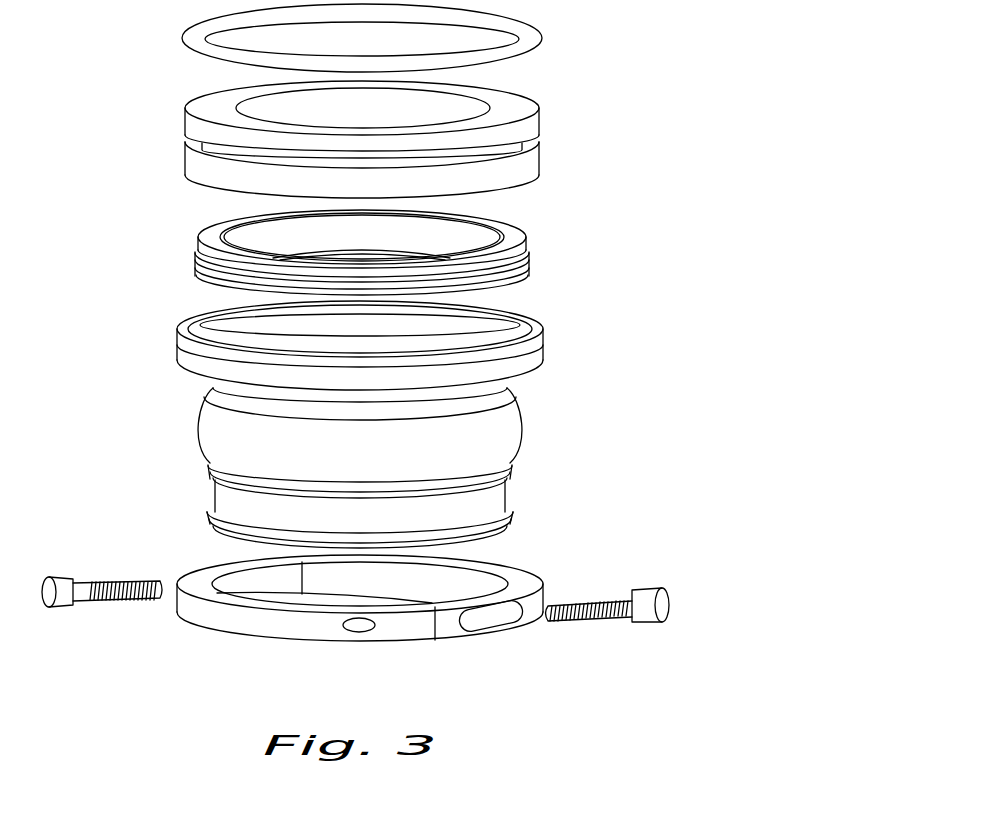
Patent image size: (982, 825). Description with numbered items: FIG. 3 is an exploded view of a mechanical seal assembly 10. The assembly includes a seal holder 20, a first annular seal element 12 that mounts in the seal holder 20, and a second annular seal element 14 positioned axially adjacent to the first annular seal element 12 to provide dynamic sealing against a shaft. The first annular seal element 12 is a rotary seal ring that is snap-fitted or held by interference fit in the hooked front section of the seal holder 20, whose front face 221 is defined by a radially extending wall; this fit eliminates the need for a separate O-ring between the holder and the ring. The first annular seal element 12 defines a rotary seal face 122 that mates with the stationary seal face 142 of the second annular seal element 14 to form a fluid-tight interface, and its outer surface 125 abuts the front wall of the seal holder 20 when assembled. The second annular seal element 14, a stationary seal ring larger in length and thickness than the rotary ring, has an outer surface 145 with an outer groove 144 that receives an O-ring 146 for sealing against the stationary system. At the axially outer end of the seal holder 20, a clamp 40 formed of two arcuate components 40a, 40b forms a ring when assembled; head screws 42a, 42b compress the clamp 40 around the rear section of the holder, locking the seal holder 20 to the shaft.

The seal assembly 10 is at (610, 203).
The first annular seal element 12 is at (556, 258).
The second annular seal element 14 is at (557, 125).
The seal holder 20 is at (551, 426).
The clamp 40 is at (534, 580).
The arcuate component 40a is at (360, 620).
The arcuate component 40b is at (360, 583).
The head screw 42a is at (657, 583).
The head screw 42b is at (70, 573).
The rotary seal face 122 is at (519, 233).
The outer surface 125 is at (200, 252).
The stationary seal face 142 is at (186, 196).
The outer groove 144 is at (185, 138).
The outer surface 145 is at (533, 160).
The O-ring 146 is at (541, 35).
The front face 221 is at (527, 329).